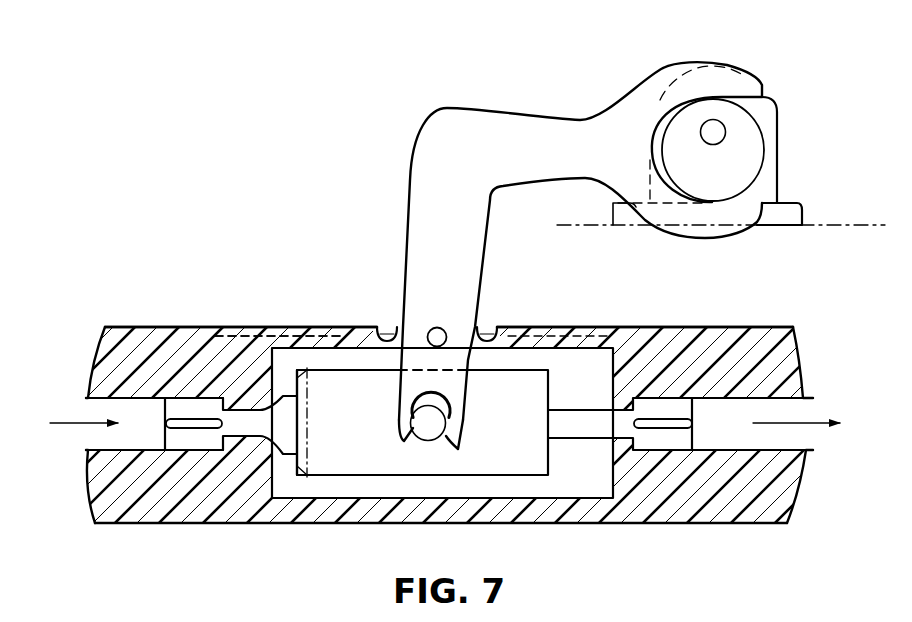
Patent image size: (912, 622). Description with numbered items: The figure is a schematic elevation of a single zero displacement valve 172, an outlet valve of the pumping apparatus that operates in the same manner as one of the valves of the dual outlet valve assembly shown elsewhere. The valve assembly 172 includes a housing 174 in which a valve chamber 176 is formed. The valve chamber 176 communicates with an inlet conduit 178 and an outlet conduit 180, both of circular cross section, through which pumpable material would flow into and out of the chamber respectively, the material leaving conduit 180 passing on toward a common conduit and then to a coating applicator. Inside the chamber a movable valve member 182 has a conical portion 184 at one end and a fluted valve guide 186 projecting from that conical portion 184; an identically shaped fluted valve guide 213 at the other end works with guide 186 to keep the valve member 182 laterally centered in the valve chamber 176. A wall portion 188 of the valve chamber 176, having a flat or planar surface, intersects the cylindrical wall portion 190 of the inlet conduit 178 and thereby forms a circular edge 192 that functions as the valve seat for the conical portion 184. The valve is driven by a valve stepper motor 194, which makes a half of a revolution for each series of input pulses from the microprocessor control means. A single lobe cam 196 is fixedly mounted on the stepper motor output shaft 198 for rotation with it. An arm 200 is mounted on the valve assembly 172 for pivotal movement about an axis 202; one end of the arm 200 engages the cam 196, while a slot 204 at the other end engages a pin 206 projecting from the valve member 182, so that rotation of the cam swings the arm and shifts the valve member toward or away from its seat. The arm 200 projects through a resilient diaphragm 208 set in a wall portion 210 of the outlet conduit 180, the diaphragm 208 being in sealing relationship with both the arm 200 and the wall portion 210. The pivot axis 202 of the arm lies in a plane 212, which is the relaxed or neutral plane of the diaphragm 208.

The single zero displacement valve 172 is at (288, 278).
The housing 174 is at (176, 327).
The valve chamber 176 is at (393, 490).
The inlet conduit 178 is at (100, 466).
The outlet conduit 180 is at (795, 370).
The valve member 182 is at (306, 480).
The conical portion 184 is at (247, 524).
The fluted valve guide 186 is at (188, 410).
The wall portion 188 is at (292, 327).
The cylindrical wall portion 190 is at (245, 403).
The circular edge 192 is at (258, 406).
The valve stepper motor 194 is at (782, 71).
The single lobe cam 196 is at (738, 152).
The stepper motor output shaft 198 is at (722, 128).
The arm 200 is at (545, 125).
The axis 202 is at (446, 331).
The slot 204 is at (447, 403).
The pin 206 is at (422, 424).
The resilient diaphragm 208 is at (390, 330).
The wall portion 210 is at (588, 328).
The plane 212 is at (328, 336).
The fluted valve guide 213 is at (668, 412).